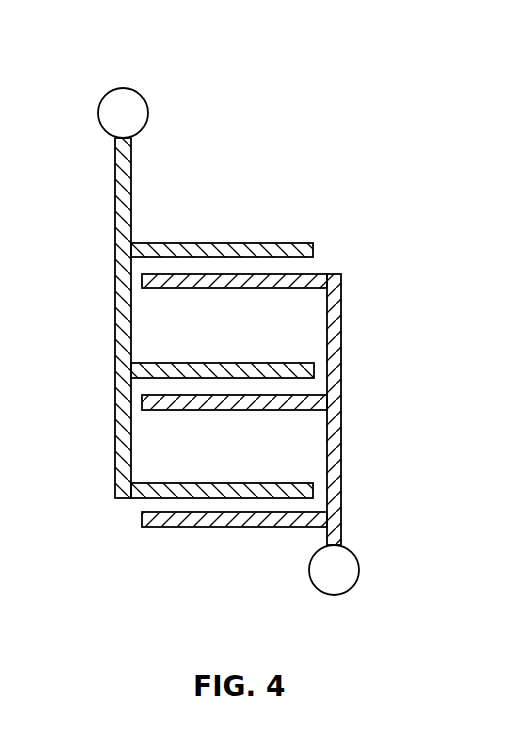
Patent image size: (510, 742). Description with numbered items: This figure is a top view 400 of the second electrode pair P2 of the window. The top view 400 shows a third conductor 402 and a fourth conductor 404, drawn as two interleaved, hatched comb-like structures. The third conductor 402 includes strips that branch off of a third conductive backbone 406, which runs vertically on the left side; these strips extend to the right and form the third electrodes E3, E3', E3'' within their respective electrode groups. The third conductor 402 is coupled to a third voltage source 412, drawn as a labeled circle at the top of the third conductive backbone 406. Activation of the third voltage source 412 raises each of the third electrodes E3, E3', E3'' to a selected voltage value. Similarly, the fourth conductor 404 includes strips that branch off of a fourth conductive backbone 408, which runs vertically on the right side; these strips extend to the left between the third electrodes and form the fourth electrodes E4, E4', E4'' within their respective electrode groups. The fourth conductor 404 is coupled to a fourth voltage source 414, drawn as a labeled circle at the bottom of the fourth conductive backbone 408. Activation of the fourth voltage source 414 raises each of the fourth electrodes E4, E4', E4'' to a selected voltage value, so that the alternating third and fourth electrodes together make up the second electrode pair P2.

The top view 400 is at (351, 121).
The third conductor 402 is at (116, 367).
The fourth conductor 404 is at (346, 503).
The third conductive backbone 406 is at (125, 263).
The fourth conductive backbone 408 is at (338, 398).
The third voltage source 412 is at (106, 96).
The fourth voltage source 414 is at (352, 589).
The third electrode E3 is at (224, 233).
The third electrode E3' is at (222, 352).
The third electrode E3'' is at (222, 472).
The fourth electrode E4 is at (234, 300).
The fourth electrode E4' is at (234, 420).
The fourth electrode E4'' is at (234, 537).
The second electrode pair P2 is at (248, 117).